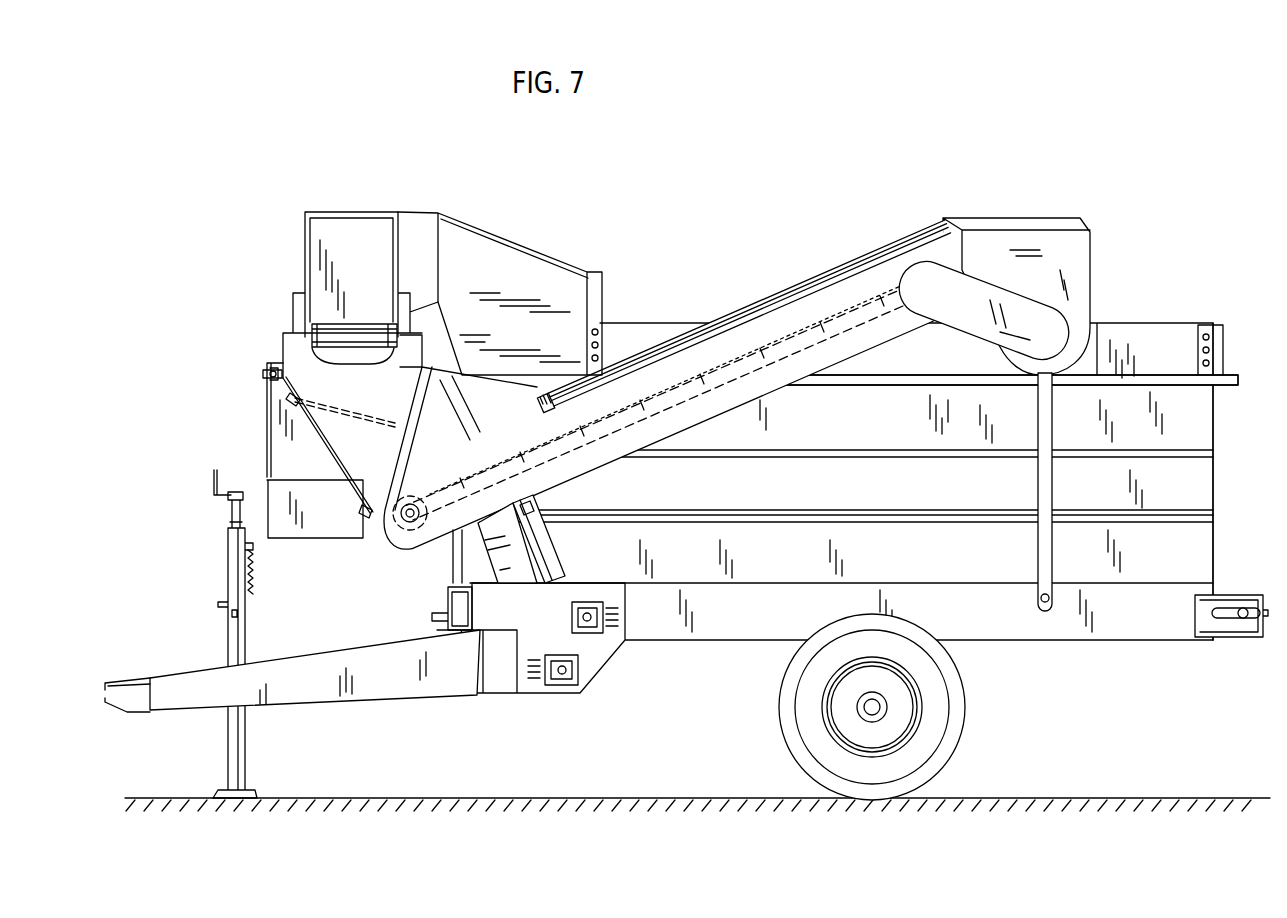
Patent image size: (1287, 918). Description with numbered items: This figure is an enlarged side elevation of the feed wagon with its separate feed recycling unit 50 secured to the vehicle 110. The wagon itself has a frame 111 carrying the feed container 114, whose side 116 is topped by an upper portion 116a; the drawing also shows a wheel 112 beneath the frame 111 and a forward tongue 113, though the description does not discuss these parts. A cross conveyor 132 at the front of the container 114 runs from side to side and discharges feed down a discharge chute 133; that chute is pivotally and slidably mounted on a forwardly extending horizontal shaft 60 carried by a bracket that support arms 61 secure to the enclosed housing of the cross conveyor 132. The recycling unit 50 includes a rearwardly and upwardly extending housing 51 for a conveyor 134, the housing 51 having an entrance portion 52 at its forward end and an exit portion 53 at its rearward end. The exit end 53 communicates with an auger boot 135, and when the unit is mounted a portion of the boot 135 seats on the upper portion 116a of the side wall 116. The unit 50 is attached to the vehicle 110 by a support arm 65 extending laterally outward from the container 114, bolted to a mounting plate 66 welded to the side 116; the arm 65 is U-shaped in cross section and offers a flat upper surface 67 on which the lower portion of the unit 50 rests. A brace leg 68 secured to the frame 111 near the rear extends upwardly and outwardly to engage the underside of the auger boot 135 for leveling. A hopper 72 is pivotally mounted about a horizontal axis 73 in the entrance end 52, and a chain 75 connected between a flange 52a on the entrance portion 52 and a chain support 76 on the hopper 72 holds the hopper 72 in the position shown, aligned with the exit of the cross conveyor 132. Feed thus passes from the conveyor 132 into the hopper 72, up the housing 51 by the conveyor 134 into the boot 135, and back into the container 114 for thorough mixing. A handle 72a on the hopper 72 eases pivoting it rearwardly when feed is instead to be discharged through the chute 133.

The feed recycling unit 50 is at (670, 382).
The housing 51 is at (760, 401).
The entrance portion 52 is at (392, 533).
The flange 52a is at (460, 442).
The exit portion 53 is at (945, 218).
The shaft 60 is at (262, 374).
The support arms 61 is at (419, 295).
The support arm 65 is at (548, 551).
The mounting plate 66 is at (518, 543).
The flat upper surface 67 is at (522, 503).
The brace leg 68 is at (1045, 492).
The hopper 72 is at (335, 440).
The handle 72a is at (270, 378).
The horizontal axis 73 is at (360, 513).
The chain 75 is at (375, 406).
The chain support 76 is at (304, 391).
The vehicle 110 is at (1158, 311).
The frame 111 is at (1073, 632).
The wheel 112 is at (778, 707).
The tongue 113 is at (344, 690).
The container 114 is at (1197, 493).
The side 116 is at (850, 498).
The upper portion of container side wall 116a is at (948, 386).
The cross conveyor 132 is at (369, 321).
The discharge chute 133 is at (264, 427).
The conveyor 134 is at (770, 336).
The auger boot 135 is at (1085, 250).